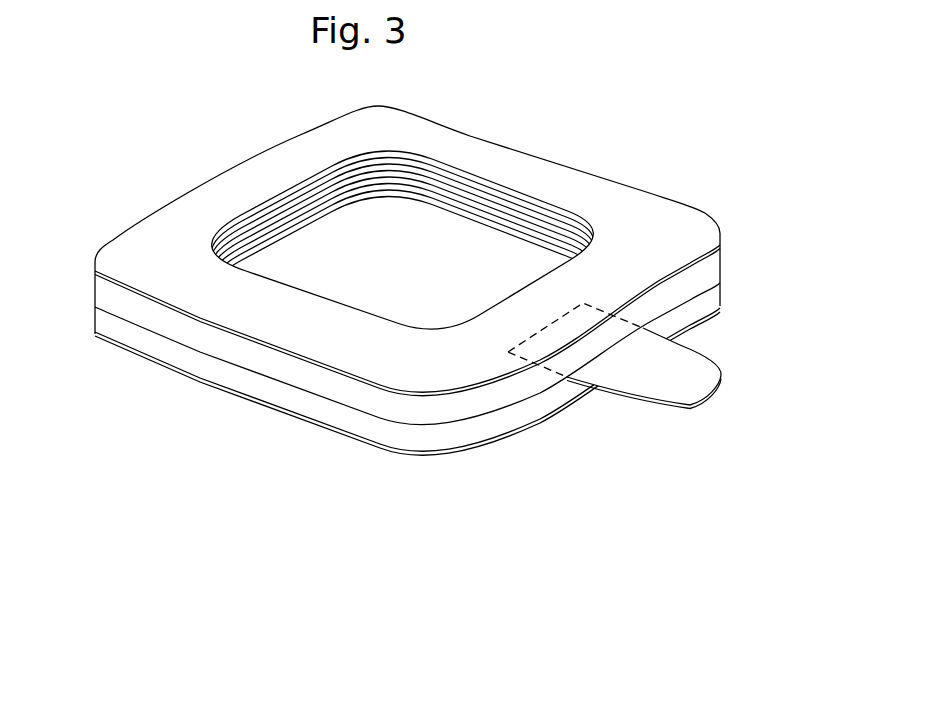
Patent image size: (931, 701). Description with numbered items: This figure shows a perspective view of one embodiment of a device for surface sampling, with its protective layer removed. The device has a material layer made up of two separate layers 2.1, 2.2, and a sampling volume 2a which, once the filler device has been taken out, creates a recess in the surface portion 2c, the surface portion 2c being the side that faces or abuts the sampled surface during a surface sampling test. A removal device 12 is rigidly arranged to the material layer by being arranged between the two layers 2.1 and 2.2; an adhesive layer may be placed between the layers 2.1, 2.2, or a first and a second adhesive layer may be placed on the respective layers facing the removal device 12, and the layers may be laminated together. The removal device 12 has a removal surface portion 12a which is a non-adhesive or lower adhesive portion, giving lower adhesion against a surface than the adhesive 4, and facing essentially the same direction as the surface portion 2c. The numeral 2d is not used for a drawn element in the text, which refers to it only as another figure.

The sampling volume 2a is at (452, 254).
The adhesive 4 is at (632, 203).
The housing side wall 2d is at (180, 197).
The surface portion 2c is at (715, 215).
The layer 2.2 is at (716, 262).
The layer 2.1 is at (716, 292).
The removal device 12 is at (667, 405).
The removal surface portion 12a is at (697, 372).